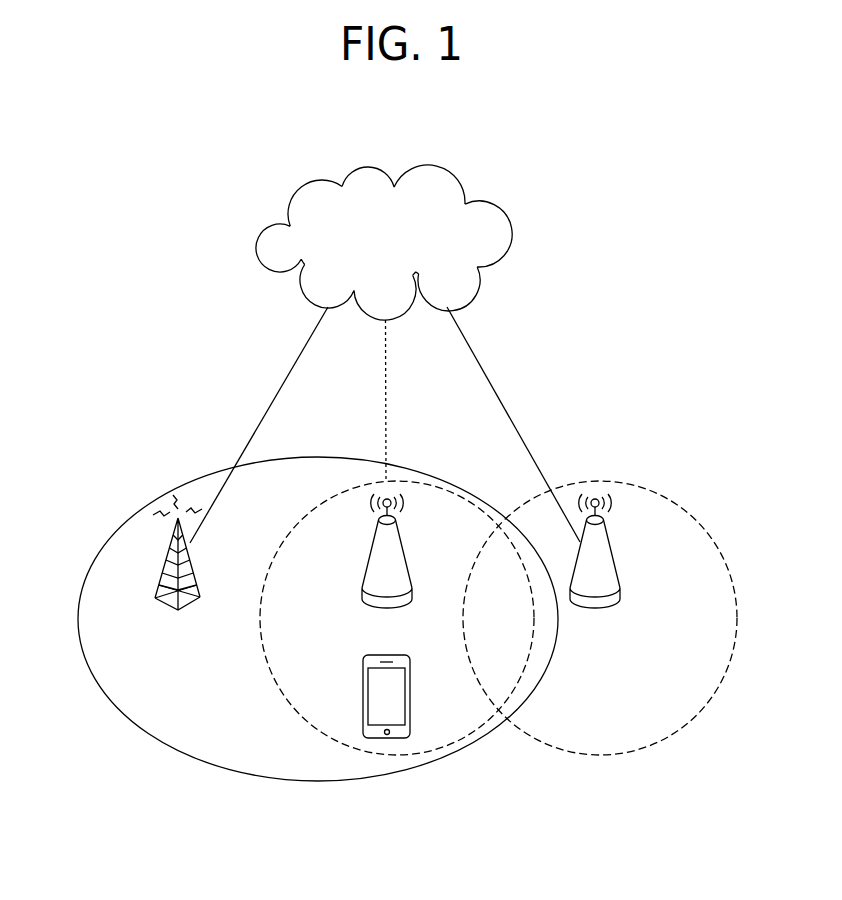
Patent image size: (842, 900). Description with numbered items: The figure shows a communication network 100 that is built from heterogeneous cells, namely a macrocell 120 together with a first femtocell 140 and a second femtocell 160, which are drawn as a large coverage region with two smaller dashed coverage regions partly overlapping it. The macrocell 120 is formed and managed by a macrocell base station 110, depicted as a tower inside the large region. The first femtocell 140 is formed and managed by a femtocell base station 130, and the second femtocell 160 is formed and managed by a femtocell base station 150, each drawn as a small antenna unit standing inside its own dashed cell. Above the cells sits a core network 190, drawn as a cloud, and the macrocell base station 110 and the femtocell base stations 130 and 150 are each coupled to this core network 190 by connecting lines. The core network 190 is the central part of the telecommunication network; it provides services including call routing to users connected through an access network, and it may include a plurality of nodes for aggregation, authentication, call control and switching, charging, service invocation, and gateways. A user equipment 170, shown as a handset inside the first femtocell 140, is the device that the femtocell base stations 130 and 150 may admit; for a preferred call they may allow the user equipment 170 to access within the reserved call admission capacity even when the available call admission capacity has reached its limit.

The communication network 100 is at (664, 206).
The macrocell base station 110 is at (193, 568).
The macrocell 120 is at (113, 530).
The femtocell base station 130 is at (403, 555).
The first femtocell 140 is at (412, 483).
The femtocell base station 150 is at (613, 555).
The second femtocell 160 is at (643, 487).
The user equipment 170 is at (410, 700).
The core network 190 is at (430, 165).